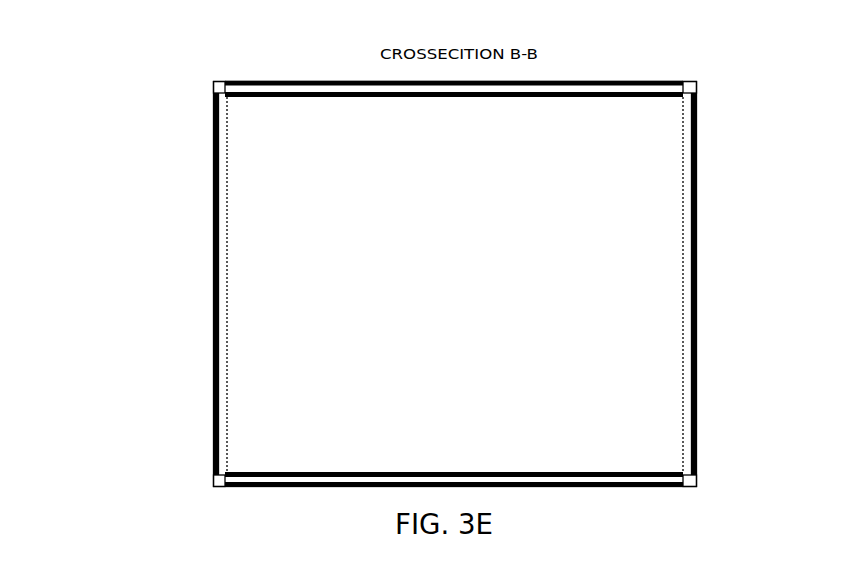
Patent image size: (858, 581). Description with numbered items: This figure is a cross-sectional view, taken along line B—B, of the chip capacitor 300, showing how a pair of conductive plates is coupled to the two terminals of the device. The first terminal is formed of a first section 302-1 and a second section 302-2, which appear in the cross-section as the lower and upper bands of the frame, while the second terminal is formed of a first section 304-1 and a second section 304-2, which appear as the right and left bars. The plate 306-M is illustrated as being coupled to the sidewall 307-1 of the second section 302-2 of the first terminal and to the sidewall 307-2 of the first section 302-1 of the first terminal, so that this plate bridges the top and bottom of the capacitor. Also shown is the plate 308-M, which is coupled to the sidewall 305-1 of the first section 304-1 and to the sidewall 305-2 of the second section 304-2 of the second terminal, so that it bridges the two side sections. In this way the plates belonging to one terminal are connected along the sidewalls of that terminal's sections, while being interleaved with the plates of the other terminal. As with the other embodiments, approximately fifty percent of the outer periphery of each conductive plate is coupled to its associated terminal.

The chip capacitor 300 is at (750, 92).
The first section of the first terminal 302-1 is at (306, 498).
The second section of the first terminal 302-2 is at (547, 70).
The first section of the second terminal 304-1 is at (708, 322).
The second section of the second terminal 304-2 is at (203, 399).
The sidewall of the first section of the second terminal 305-1 is at (698, 234).
The sidewall of the second section of the second terminal 305-2 is at (213, 320).
The plate 306-M is at (603, 81).
The sidewall of the second section of the first terminal 307-1 is at (353, 81).
The sidewall of the first section of the first terminal 307-2 is at (590, 488).
The plate 308-M is at (297, 238).